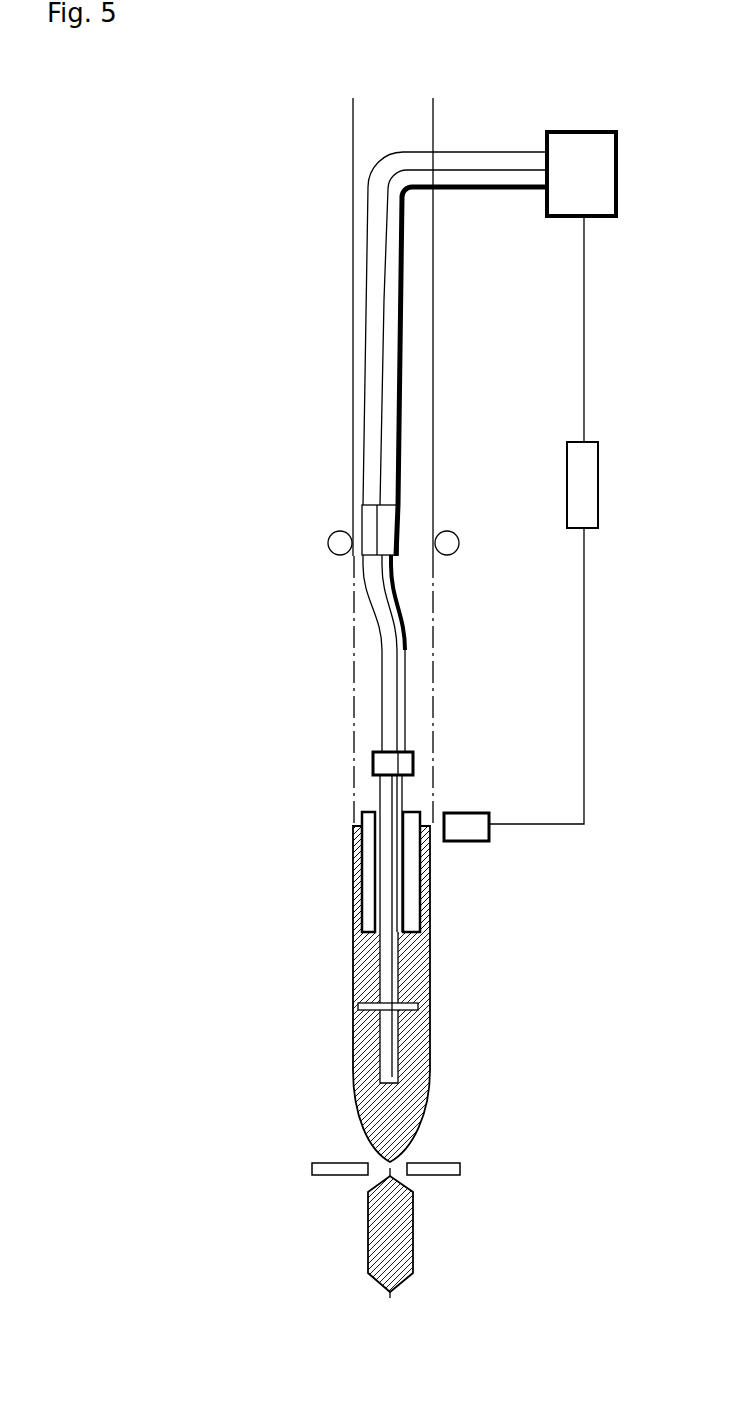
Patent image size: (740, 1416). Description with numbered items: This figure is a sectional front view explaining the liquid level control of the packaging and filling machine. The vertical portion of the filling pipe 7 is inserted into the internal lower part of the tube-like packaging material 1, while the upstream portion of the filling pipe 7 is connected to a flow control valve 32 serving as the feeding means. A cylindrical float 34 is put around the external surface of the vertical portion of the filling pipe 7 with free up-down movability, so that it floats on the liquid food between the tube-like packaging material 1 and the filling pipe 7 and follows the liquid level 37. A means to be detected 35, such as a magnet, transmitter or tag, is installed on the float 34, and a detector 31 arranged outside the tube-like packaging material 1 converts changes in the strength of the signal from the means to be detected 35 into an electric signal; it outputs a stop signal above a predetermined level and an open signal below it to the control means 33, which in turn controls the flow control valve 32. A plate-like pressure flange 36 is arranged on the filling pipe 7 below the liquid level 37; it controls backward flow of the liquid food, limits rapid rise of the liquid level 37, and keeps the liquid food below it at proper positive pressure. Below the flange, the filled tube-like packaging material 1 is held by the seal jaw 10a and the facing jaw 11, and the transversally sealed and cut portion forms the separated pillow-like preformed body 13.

The tube-like packaging material 1 is at (352, 365).
The filling pipe 7 is at (492, 152).
The flow control valve 32 is at (565, 192).
The control means 33 is at (568, 483).
The detector 31 is at (465, 830).
The float 34 is at (420, 888).
The means to be detected 35 is at (417, 812).
The liquid level 37 is at (356, 822).
The pressure flange 36 is at (420, 1002).
The facing jaw 11 is at (334, 1155).
The seal jaw 10a is at (450, 1155).
The pillow-like preformed body 13 is at (419, 1233).